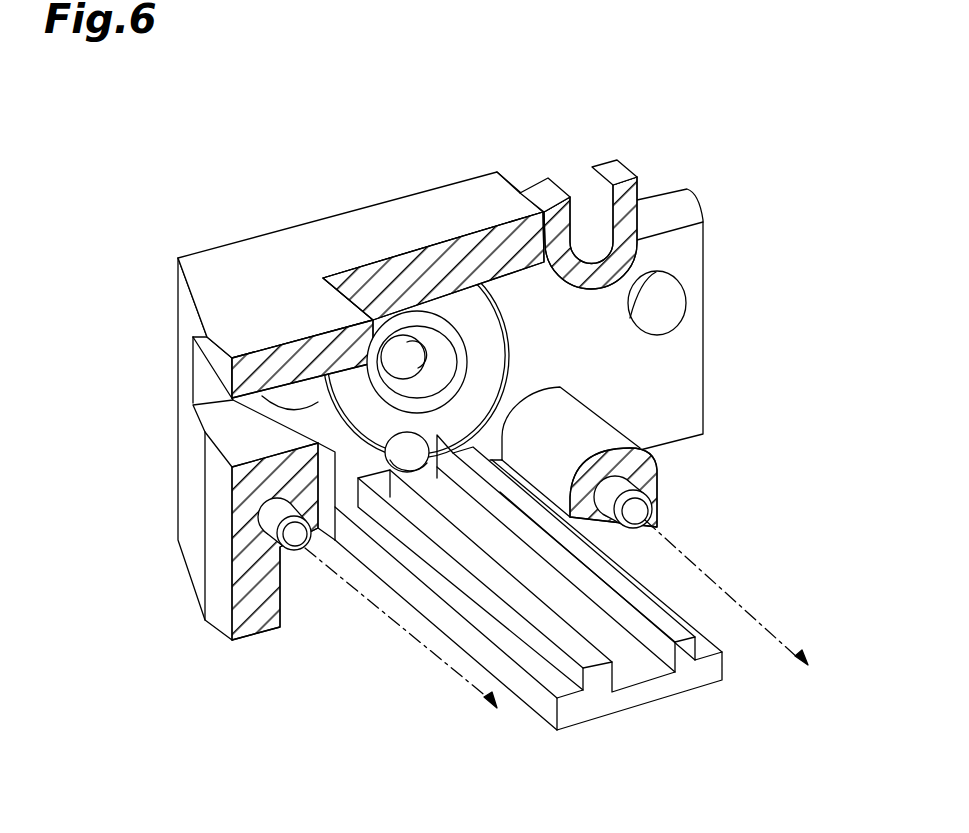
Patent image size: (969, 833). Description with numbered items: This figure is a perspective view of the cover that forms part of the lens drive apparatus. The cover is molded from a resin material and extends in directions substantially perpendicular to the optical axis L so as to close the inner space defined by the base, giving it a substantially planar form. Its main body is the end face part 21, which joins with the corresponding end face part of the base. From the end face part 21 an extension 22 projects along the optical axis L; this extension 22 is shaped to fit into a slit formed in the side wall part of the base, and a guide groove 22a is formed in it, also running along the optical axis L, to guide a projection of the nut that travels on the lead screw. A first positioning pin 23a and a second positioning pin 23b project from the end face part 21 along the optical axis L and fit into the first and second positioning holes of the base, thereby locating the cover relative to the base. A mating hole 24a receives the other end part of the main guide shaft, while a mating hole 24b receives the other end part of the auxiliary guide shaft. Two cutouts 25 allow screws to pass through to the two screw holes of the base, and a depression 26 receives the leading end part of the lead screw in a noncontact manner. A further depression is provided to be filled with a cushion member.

The end face part 21 is at (397, 273).
The extension 22 is at (584, 708).
The guide groove 22a is at (627, 673).
The first positioning pin 23a is at (652, 527).
The second positioning pin 23b is at (297, 545).
The mating hole 24a is at (672, 290).
The mating hole 24b is at (318, 381).
The cutouts 25 is at (597, 197).
The depression 26 is at (425, 364).
The optical axis L is at (758, 592).